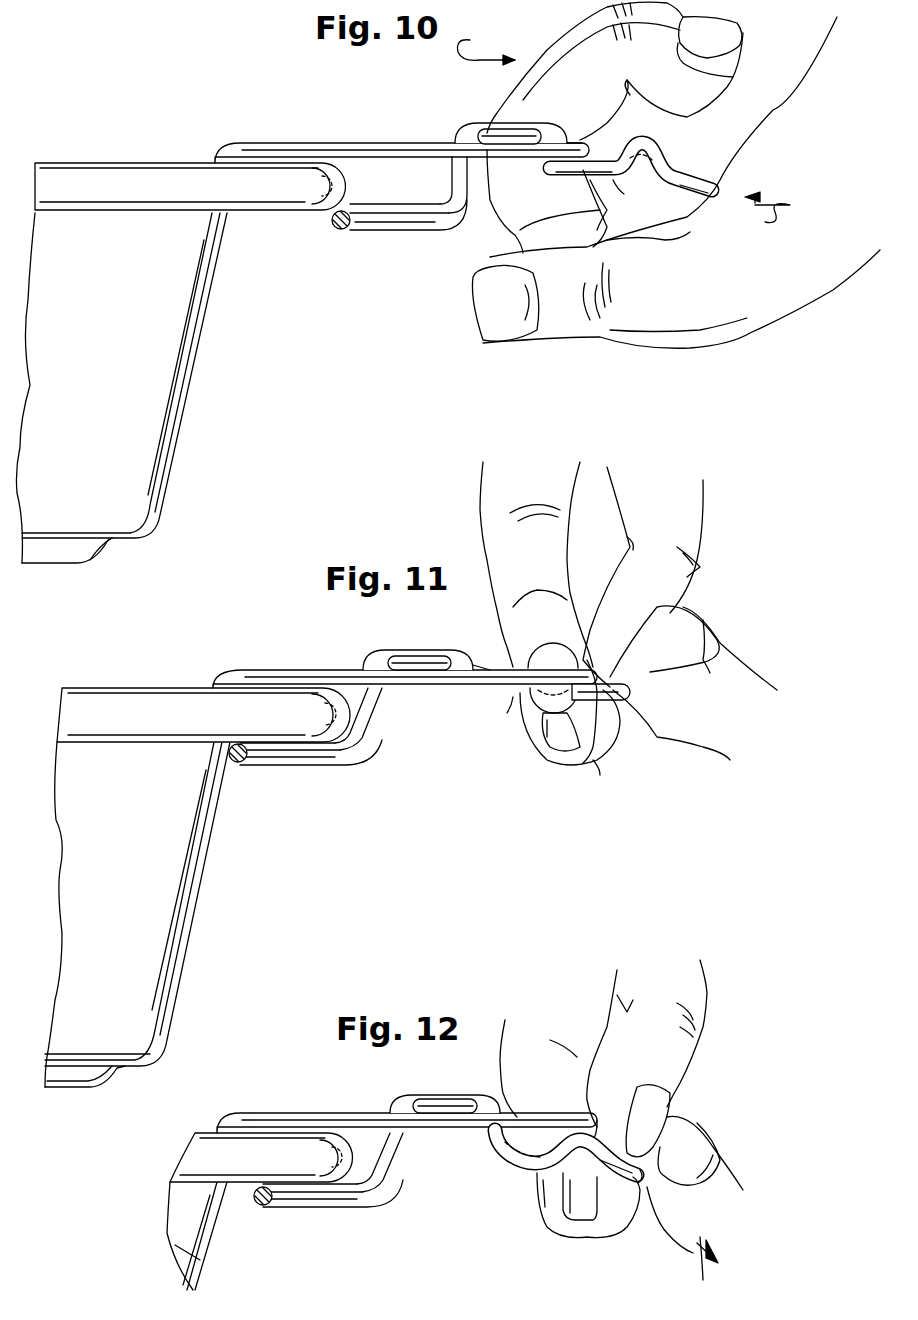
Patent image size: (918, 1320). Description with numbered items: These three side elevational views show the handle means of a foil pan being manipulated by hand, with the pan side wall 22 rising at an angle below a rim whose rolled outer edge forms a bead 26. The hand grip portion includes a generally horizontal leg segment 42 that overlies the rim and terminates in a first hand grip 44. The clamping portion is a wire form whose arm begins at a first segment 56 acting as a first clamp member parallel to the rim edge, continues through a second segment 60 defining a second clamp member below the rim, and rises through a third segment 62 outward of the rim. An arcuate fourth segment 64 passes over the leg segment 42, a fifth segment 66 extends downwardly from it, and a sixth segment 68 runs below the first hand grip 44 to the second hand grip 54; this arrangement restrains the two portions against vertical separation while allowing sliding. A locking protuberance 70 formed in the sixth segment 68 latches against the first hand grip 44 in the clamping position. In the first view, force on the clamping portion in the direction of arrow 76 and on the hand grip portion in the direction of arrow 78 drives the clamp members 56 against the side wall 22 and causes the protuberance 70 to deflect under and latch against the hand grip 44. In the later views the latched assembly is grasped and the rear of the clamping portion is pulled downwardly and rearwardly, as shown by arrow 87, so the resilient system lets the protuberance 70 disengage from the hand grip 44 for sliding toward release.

In FIG. 10, the side wall 22 is at (133, 432).
In FIG. 11, the side wall 22 is at (163, 930).
In FIG. 12, the side wall 22 is at (197, 1243).
In FIG. 10, the bead 26 is at (157, 173).
In FIG. 11, the bead 26 is at (150, 703).
In FIG. 12, the bead 26 is at (200, 1147).
In FIG. 10, the leg segment 42 is at (370, 150).
In FIG. 11, the leg segment 42 is at (297, 678).
In FIG. 12, the leg segment 42 is at (363, 1113).
In FIG. 11, the first hand grip 44 is at (587, 655).
In FIG. 12, the first hand grip 44 is at (603, 1128).
In FIG. 11, the second hand grip 54 is at (640, 690).
In FIG. 12, the second hand grip 54 is at (650, 1190).
In FIG. 10, the first segment 56 is at (338, 228).
In FIG. 11, the first segment 56 is at (240, 762).
In FIG. 12, the first segment 56 is at (263, 1203).
In FIG. 10, the second segment 60 is at (400, 227).
In FIG. 11, the second segment 60 is at (307, 757).
In FIG. 12, the second segment 60 is at (323, 1200).
In FIG. 10, the third segment 62 is at (453, 178).
In FIG. 11, the third segment 62 is at (373, 703).
In FIG. 12, the third segment 62 is at (383, 1167).
In FIG. 10, the fourth segment 64 is at (508, 131).
In FIG. 11, the fourth segment 64 is at (417, 652).
In FIG. 12, the fourth segment 64 is at (460, 1073).
In FIG. 10, the fifth segment 66 is at (600, 101).
In FIG. 11, the fifth segment 66 is at (483, 647).
In FIG. 10, the sixth segment 68 is at (673, 182).
In FIG. 11, the sixth segment 68 is at (513, 700).
In FIG. 10, the locking protuberance 70 is at (640, 141).
In FIG. 11, the locking protuberance 70 is at (560, 653).
In FIG. 12, the locking protuberance 70 is at (530, 1167).
In FIG. 10, the arrow 76 is at (763, 217).
In FIG. 10, the arrow 78 is at (487, 48).
In FIG. 12, the arrow 87 is at (693, 1260).